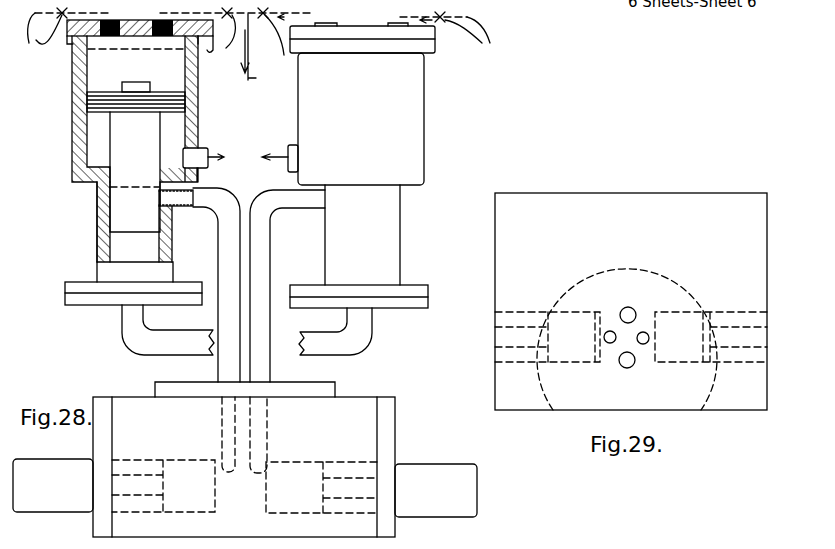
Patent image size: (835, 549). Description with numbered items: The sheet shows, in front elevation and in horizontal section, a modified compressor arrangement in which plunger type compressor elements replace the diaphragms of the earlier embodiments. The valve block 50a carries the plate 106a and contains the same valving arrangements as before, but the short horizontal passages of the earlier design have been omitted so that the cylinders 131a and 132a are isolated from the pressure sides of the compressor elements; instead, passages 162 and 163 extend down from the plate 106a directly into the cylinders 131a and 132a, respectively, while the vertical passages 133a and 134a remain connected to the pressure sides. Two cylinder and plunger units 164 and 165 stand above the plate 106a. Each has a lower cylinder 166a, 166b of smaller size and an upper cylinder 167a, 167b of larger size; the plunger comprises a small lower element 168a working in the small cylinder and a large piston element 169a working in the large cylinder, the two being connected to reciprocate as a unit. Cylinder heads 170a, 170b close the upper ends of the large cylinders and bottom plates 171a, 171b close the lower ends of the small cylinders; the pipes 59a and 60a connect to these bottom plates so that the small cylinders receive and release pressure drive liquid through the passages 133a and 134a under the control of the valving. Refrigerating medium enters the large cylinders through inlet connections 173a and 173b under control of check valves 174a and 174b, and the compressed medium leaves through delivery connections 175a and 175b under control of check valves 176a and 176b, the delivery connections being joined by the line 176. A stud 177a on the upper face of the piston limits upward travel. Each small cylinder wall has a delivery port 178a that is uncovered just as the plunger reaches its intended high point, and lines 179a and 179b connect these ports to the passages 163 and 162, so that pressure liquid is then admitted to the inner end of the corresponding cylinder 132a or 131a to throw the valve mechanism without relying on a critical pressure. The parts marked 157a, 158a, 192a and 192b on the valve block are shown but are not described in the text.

In FIG. 28, the valve block 50a is at (360, 399).
In FIG. 29, the valve block 50a is at (631, 301).
In FIG. 28, the pipe 59a is at (147, 343).
In FIG. 28, the pipe 60a is at (347, 342).
In FIG. 28, the plate 106a is at (297, 378).
In FIG. 29, the plate 106a is at (558, 303).
In FIG. 28, the cylinder 131a is at (339, 460).
In FIG. 29, the cylinder 131a is at (742, 300).
In FIG. 28, the cylinder 132a is at (137, 460).
In FIG. 29, the cylinder 132a is at (516, 311).
In FIG. 29, the vertical passage 133a is at (627, 368).
In FIG. 29, the vertical passage 134a is at (632, 310).
In FIG. 28, the right valve stem 157a is at (436, 490).
In FIG. 28, the left valve stem 158a is at (53, 485).
In FIG. 28, the passage 162 is at (268, 417).
In FIG. 29, the passage 162 is at (643, 345).
In FIG. 28, the passage 163 is at (221, 417).
In FIG. 29, the passage 163 is at (609, 331).
In FIG. 28, the cylinder and plunger unit 164 is at (92, 201).
In FIG. 28, the cylinder and plunger unit 165 is at (426, 147).
In FIG. 28, the lower cylinder 166a is at (110, 252).
In FIG. 28, the lower cylinder 166b is at (383, 250).
In FIG. 28, the upper cylinder 167a is at (88, 160).
In FIG. 28, the upper cylinder 167b is at (398, 117).
In FIG. 28, the small plunger element 168a is at (140, 223).
In FIG. 28, the large piston element 169a is at (170, 107).
In FIG. 28, the cylinder head 170a is at (200, 52).
In FIG. 28, the cylinder head 170b is at (395, 33).
In FIG. 28, the bottom plate 171a is at (102, 300).
In FIG. 28, the bottom plate 171b is at (400, 303).
In FIG. 28, the inlet connection 173a is at (63, 35).
In FIG. 28, the inlet connection 173b is at (465, 35).
In FIG. 28, the check valve 174a is at (70, 22).
In FIG. 28, the check valve 174b is at (471, 41).
In FIG. 28, the delivery connection 175a is at (208, 50).
In FIG. 28, the delivery connection 175b is at (325, 26).
In FIG. 28, the line 176 is at (263, 53).
In FIG. 28, the check valve 176a is at (236, 35).
In FIG. 28, the check valve 176b is at (282, 44).
In FIG. 28, the stud 177a is at (123, 87).
In FIG. 28, the delivery port 178a is at (160, 202).
In FIG. 28, the line 179a is at (227, 267).
In FIG. 28, the line 179b is at (265, 260).
In FIG. 28, the left valve seat 192a is at (212, 543).
In FIG. 28, the right valve seat 192b is at (269, 543).